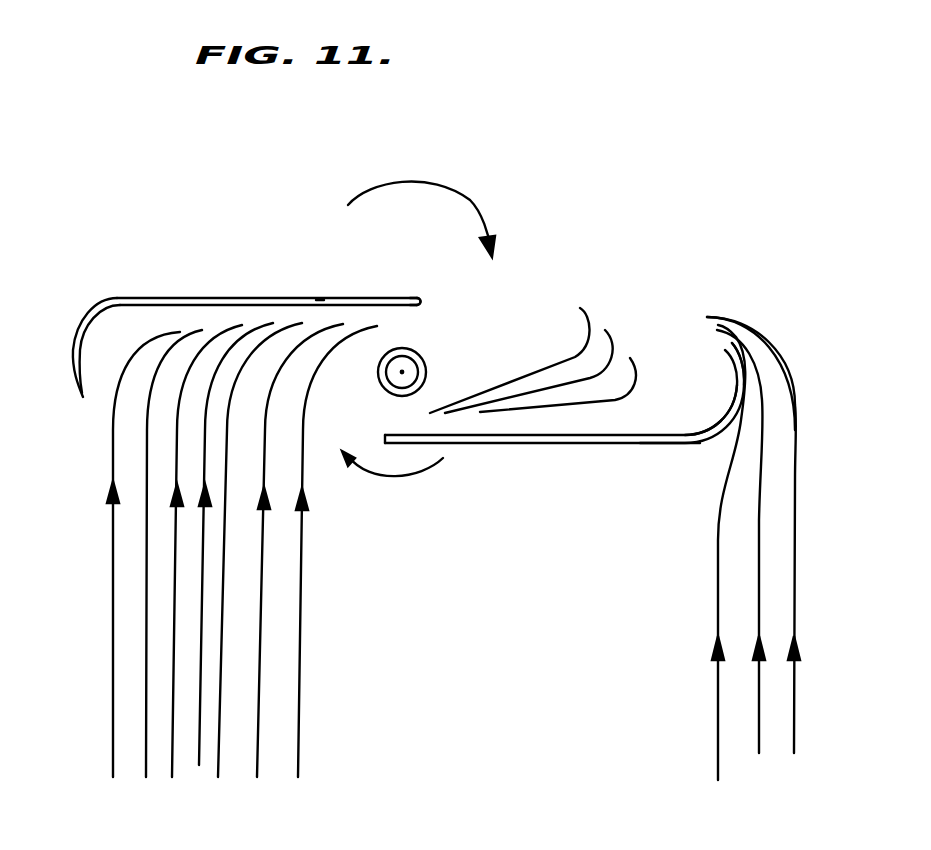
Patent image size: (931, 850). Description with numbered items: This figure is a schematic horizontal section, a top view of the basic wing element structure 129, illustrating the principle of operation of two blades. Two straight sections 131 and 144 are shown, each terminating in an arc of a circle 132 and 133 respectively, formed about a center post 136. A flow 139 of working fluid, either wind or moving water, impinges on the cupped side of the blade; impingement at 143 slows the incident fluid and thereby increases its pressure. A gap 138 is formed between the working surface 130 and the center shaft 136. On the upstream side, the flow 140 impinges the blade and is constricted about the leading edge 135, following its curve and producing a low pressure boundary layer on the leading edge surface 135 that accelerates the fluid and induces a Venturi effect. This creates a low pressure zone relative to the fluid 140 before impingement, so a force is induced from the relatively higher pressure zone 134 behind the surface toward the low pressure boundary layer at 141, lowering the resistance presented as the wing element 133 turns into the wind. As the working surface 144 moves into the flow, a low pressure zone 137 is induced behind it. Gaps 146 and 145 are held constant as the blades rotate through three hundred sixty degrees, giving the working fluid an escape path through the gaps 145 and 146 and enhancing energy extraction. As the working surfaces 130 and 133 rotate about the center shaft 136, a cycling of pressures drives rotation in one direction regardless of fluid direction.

The basic wing element structure 129 is at (168, 183).
The working surface 130 is at (320, 305).
The straight section 131 is at (238, 298).
The arc of a circle 132 is at (68, 347).
The arc of a circle 133 is at (783, 378).
The higher pressure zone 134 is at (695, 422).
The leading edge 135 is at (706, 446).
The center post 136 is at (385, 388).
The low pressure zone 137 is at (537, 372).
The gap 138 is at (370, 313).
The flow 139 is at (127, 582).
The flow 140 is at (724, 566).
The low pressure boundary layer 141 is at (740, 342).
The impingement location 143 is at (112, 343).
The straight section 144 is at (538, 444).
The gap 145 is at (407, 323).
The gap 146 is at (405, 412).